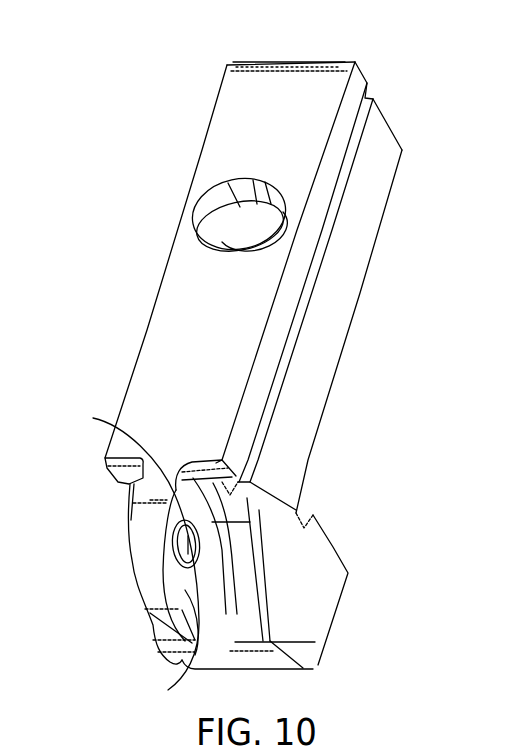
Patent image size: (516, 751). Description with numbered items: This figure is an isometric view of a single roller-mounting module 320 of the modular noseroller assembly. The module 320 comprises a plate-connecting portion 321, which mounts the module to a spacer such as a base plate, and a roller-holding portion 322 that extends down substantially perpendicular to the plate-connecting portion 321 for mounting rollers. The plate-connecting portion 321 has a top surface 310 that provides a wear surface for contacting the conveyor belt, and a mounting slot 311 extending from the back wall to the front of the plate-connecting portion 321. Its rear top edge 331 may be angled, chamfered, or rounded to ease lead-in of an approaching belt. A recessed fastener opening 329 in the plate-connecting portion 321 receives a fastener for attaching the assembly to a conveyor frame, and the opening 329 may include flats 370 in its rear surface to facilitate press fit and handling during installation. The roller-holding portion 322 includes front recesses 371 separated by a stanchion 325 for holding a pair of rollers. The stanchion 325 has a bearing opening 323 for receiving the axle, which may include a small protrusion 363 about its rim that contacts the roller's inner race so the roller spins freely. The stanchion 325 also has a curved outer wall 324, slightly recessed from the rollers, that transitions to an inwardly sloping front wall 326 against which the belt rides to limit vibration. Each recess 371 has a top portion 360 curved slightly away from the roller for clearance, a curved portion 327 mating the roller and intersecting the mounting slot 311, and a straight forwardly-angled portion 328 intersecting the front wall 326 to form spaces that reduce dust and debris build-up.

The top surface 310 is at (203, 353).
The mounting slot 311 is at (367, 93).
The roller-mounting module 320 is at (150, 112).
The plate-connecting portion 321 is at (386, 170).
The roller-holding portion 322 is at (323, 573).
The bearing opening 323 is at (119, 536).
The curved outer wall 324 is at (133, 553).
The stanchion 325 is at (185, 590).
The sloping front wall 326 is at (268, 668).
The curved portion 327 is at (247, 508).
The straight forwardly-angled portion 328 is at (257, 601).
The fastener opening 329 is at (203, 222).
The rear top edge 331 is at (233, 66).
The top portion 360 is at (204, 462).
The small protrusion 363 is at (144, 665).
The flats 370 is at (250, 193).
The front recesses 371 is at (117, 487).